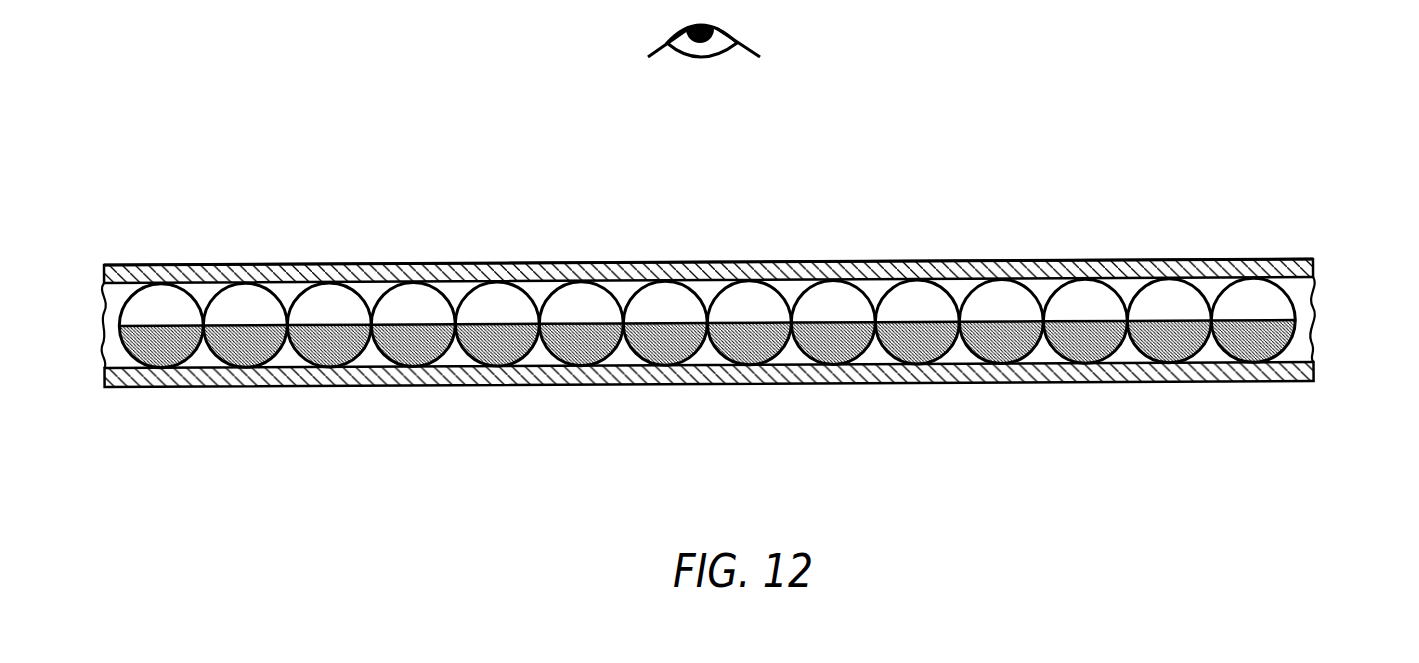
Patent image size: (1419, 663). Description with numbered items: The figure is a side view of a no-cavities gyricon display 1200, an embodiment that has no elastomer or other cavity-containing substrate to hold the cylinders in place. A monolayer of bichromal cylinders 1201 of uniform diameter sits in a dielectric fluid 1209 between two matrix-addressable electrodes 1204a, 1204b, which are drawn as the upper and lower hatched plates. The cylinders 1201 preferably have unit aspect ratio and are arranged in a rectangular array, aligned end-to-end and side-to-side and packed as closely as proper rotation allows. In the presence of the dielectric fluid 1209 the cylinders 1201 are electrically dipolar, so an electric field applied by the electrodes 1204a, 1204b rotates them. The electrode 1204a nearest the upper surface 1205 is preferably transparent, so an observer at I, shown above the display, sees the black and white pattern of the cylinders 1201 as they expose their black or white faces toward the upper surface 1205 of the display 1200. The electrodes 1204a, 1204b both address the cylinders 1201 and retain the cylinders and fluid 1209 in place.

The display 1200 is at (272, 122).
The bichromal cylinders 1201 is at (555, 292).
The matrix-addressable electrode 1204a is at (1316, 266).
The matrix-addressable electrode 1204b is at (1316, 371).
The upper surface 1205 is at (417, 256).
The dielectric fluid 1209 is at (1326, 320).
The observer I is at (712, 36).